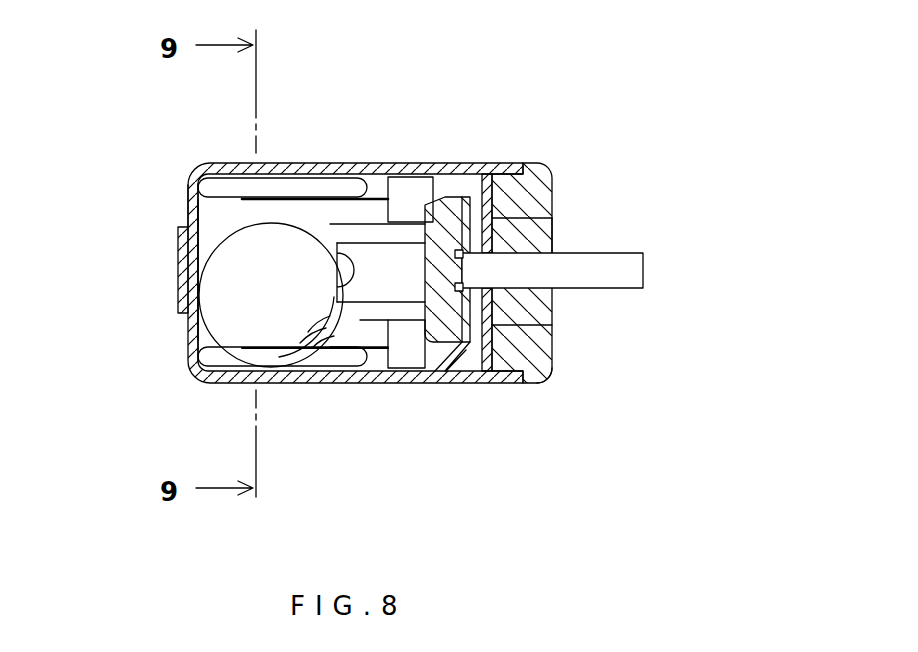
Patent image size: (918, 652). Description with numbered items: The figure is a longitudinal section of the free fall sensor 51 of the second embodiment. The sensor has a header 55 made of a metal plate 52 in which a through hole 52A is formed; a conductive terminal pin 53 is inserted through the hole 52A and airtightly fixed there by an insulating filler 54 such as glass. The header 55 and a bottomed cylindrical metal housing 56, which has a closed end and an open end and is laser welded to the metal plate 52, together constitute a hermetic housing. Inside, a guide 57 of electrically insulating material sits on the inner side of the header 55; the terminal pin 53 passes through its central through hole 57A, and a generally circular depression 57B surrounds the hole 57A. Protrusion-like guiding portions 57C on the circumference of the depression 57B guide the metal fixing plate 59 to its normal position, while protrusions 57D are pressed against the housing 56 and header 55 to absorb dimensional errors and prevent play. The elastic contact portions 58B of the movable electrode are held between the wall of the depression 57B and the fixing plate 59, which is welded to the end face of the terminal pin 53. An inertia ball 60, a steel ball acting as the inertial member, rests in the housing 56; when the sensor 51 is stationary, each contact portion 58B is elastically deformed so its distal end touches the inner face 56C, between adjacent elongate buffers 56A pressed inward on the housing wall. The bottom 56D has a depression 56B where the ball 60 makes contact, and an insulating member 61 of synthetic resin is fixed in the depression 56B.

The free fall sensor 51 is at (641, 218).
The metal plate 52 is at (538, 165).
The through hole 52A is at (553, 228).
The terminal pin 53 is at (572, 272).
The insulating filler 54 is at (555, 307).
The header 55 is at (563, 386).
The metal housing 56 is at (328, 172).
The buffers 56A is at (250, 188).
The depression 56B is at (178, 207).
The inner face 56C is at (217, 217).
The bottom 56D is at (188, 352).
The guide 57 is at (458, 200).
The through hole 57A is at (530, 307).
The depression 57B is at (463, 378).
The guiding portions 57C is at (415, 183).
The protrusions 57D is at (505, 195).
The contact portions 58B is at (365, 240).
The fixing plate 59 is at (438, 212).
The inertia ball 60 is at (250, 313).
The insulating member 61 is at (193, 260).